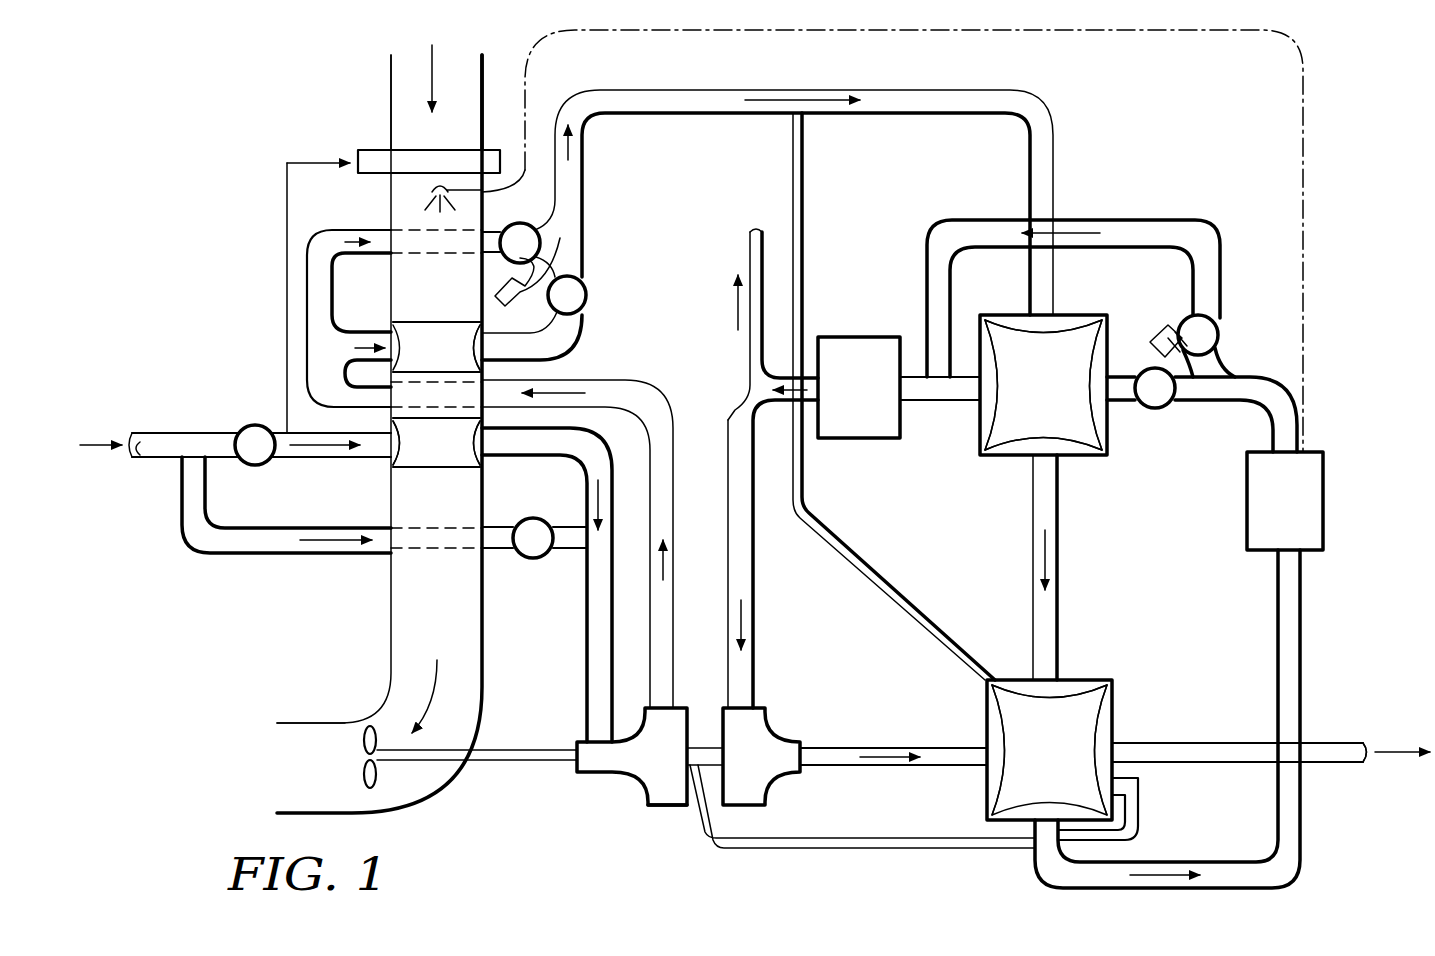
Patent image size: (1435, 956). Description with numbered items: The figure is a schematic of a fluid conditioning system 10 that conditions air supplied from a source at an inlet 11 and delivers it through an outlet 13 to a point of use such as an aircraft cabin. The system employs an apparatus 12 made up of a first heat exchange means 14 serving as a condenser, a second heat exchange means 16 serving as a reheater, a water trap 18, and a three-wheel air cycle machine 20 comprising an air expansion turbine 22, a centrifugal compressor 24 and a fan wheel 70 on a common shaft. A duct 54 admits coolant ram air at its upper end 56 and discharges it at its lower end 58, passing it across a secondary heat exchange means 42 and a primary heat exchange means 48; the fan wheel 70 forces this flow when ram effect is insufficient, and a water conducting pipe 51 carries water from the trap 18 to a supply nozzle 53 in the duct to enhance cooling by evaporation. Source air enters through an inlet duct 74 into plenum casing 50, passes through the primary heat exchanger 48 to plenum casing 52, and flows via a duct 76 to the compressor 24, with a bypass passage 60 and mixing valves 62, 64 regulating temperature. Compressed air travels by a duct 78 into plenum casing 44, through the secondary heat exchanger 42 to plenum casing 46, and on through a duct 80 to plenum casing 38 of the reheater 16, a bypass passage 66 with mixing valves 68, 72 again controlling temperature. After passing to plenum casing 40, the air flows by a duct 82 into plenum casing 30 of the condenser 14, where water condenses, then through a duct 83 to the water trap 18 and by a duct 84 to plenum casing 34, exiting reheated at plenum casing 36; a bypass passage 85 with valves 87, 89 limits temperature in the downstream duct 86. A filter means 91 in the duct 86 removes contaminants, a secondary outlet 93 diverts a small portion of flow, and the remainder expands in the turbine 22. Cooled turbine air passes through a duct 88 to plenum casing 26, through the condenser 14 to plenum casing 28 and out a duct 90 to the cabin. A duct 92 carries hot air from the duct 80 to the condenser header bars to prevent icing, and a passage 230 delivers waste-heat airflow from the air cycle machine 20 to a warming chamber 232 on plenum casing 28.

The system 10 is at (285, 105).
The inlet 11 is at (135, 437).
The apparatus 12 is at (588, 810).
The outlet 13 is at (1360, 742).
The first heat exchange means 14 is at (1049, 750).
The second heat exchange means 16 is at (1043, 385).
The water trap 18 is at (1285, 501).
The air cycle machine 20 is at (670, 810).
The air expansion turbine 22 is at (992, 815).
The air compressor 24 is at (632, 756).
The plenum casing 26 is at (990, 700).
The plenum casing 28 is at (1115, 720).
The plenum casing 30 is at (1085, 682).
The plenum casing 34 is at (1105, 420).
The plenum casing 36 is at (985, 420).
The plenum casing 38 is at (1078, 318).
The plenum casing 40 is at (1075, 455).
The third heat exchange means 42 is at (436, 347).
The plenum casing 44 is at (392, 340).
The plenum casing 46 is at (498, 323).
The fourth heat exchange means 48 is at (436, 442).
The plenum casing 50 is at (390, 448).
The water conducting pipe 51 is at (610, 32).
The plenum casing 52 is at (480, 462).
The supply nozzle 53 is at (432, 192).
The duct 54 is at (390, 108).
The upper end 56 is at (470, 40).
The lower end 58 is at (348, 720).
The bypass passage 60 is at (290, 556).
The mixing valve 62 is at (255, 424).
The mixing valve 64 is at (540, 560).
The bypass passage 66 is at (393, 232).
The mixing valve 68 is at (540, 200).
The fan wheel 70 is at (363, 760).
The mixing valve 72 is at (592, 292).
The inlet duct 74 is at (148, 460).
The duct 76 is at (590, 615).
The duct 78 is at (648, 382).
The duct 80 is at (710, 115).
The duct 82 is at (1062, 580).
The duct 83 is at (1275, 815).
The duct 84 is at (1250, 378).
The bypass passage 85 is at (1150, 220).
The duct 86 is at (905, 440).
The valve 87 is at (1172, 405).
The duct 88 is at (860, 745).
The valve 89 is at (1225, 325).
The duct 90 is at (1230, 742).
The filter means 91 is at (899, 387).
The duct 92 is at (893, 585).
The secondary outlet 93 is at (748, 232).
The passage 230 is at (835, 850).
The warming chamber 232 is at (1145, 785).